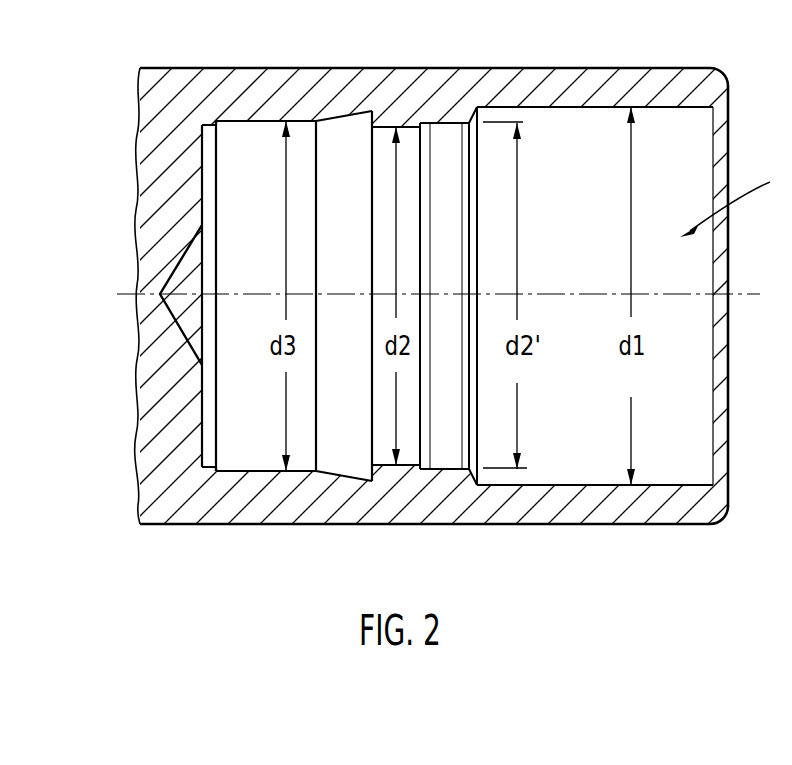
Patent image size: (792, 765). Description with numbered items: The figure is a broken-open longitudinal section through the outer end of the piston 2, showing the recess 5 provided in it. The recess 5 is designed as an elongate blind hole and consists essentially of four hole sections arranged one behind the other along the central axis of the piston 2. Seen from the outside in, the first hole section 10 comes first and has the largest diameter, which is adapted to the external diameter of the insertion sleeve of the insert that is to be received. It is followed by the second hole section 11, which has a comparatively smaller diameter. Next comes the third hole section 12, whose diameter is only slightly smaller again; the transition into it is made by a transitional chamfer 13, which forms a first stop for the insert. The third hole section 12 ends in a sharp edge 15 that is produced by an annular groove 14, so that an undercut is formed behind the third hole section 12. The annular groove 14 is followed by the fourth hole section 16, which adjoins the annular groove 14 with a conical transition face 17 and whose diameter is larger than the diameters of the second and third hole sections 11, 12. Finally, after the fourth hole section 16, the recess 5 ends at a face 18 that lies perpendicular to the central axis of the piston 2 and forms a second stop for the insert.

The piston 2 is at (565, 512).
The recess 5 is at (731, 200).
The first hole section 10 is at (688, 142).
The second hole section 11 is at (448, 188).
The third hole section 12 is at (413, 233).
The transitional chamfer 13 is at (425, 275).
The annular groove 14 is at (360, 467).
The sharp edge 15 is at (372, 127).
The fourth hole section 16 is at (250, 448).
The conical transition face 17 is at (335, 470).
The face 18 is at (203, 195).